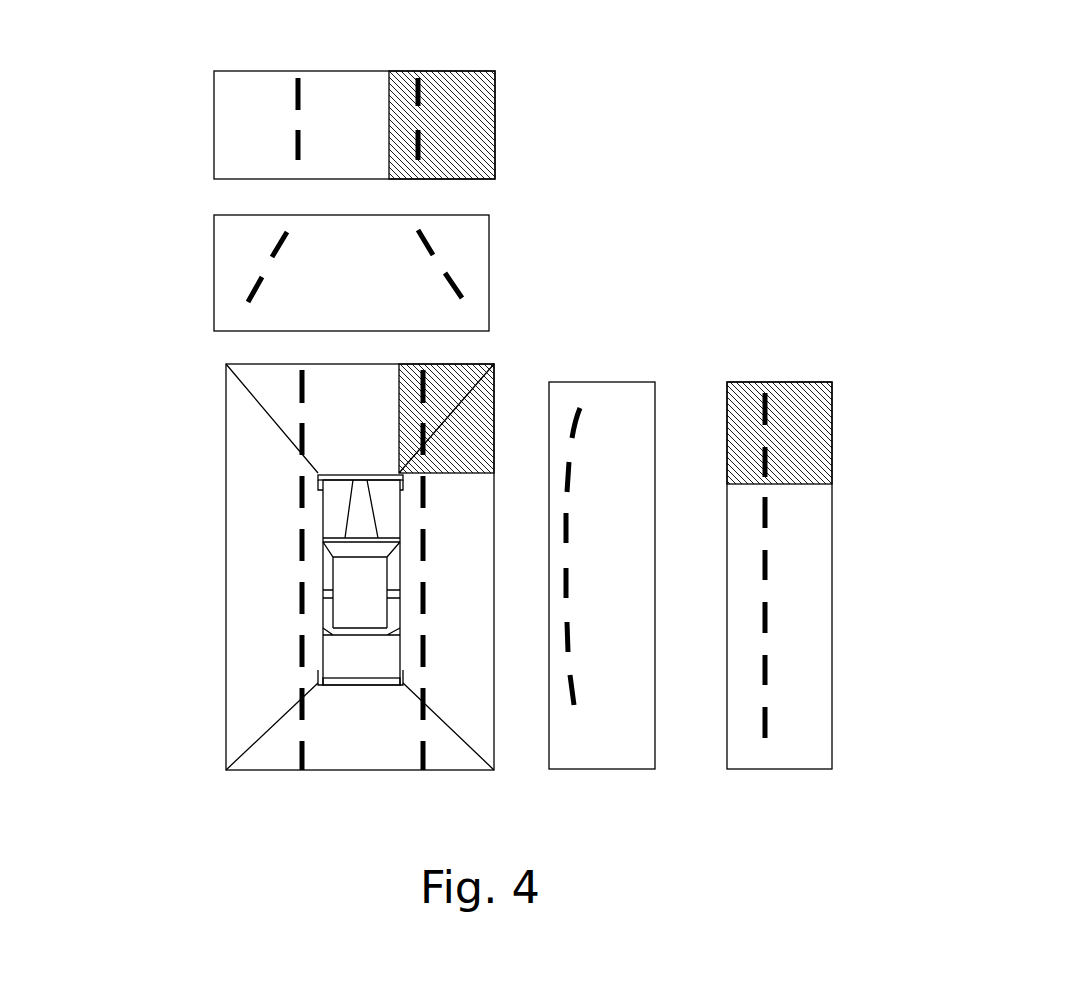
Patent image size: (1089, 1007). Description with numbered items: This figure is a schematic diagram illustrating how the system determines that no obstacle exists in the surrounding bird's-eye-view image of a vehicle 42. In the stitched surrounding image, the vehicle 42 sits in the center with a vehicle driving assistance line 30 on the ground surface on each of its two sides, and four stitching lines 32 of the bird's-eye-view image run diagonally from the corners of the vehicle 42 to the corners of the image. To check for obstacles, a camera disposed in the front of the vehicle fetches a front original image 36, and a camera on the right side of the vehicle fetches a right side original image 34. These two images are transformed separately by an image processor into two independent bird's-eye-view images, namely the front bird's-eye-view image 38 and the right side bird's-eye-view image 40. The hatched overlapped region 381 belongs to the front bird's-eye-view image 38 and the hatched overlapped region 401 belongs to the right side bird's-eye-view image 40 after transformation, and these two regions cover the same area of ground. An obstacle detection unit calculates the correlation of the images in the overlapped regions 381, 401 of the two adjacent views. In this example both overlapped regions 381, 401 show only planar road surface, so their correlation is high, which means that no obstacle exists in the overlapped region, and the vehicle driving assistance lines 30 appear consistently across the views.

The vehicle driving assistance line 30 is at (297, 148).
The stitching lines of the bird's-eye-view image 32 is at (260, 736).
The right side original image 34 is at (592, 382).
The front original image 36 is at (214, 270).
The front bird's-eye-view image 38 is at (214, 92).
The overlapped region of the front bird's-eye-view image 381 is at (495, 108).
The right side bird's-eye-view image 40 is at (832, 547).
The overlapped region of the right side bird's-eye-view image 401 is at (780, 382).
The vehicle 42 is at (323, 512).